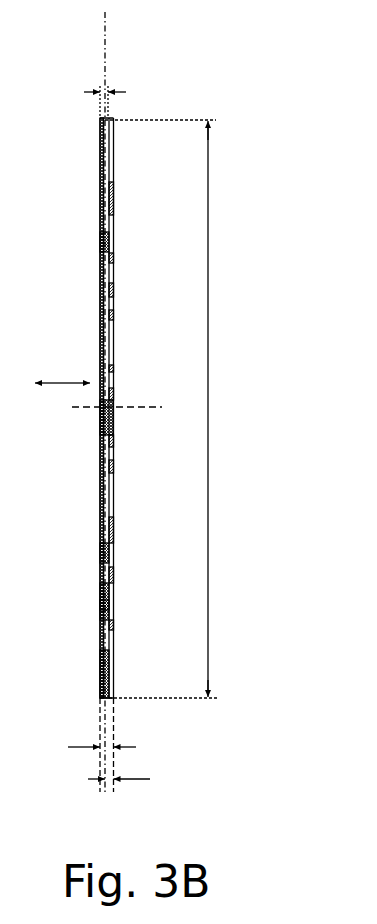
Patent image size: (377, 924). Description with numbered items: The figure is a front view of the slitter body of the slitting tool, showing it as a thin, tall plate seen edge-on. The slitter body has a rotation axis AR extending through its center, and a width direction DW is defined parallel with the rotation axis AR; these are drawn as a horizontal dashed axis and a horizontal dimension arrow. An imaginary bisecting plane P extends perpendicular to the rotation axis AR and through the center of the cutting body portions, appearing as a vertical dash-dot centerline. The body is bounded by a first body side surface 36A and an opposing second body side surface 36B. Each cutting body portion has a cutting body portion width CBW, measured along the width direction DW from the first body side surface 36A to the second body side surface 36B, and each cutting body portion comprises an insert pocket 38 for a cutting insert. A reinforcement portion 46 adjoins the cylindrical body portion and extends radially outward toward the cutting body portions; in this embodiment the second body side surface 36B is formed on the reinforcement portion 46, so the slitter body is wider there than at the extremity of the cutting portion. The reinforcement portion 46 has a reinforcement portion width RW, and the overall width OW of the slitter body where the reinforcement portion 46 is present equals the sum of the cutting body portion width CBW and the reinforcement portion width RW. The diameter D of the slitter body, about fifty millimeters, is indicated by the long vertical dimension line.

The first body side surface 36A is at (96, 263).
The second body side surface 36B is at (118, 267).
The reinforcement portion 46 is at (113, 180).
The insert pocket 38 is at (9, 314).
The imaginary bisecting plane P is at (105, 396).
The cutting body portion width CBW is at (86, 92).
The diameter D is at (167, 409).
The width direction DW is at (62, 365).
The rotation axis AR is at (101, 410).
The overall width OW is at (78, 747).
The reinforcement portion width RW is at (137, 779).